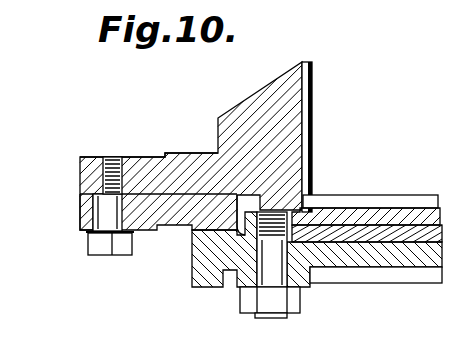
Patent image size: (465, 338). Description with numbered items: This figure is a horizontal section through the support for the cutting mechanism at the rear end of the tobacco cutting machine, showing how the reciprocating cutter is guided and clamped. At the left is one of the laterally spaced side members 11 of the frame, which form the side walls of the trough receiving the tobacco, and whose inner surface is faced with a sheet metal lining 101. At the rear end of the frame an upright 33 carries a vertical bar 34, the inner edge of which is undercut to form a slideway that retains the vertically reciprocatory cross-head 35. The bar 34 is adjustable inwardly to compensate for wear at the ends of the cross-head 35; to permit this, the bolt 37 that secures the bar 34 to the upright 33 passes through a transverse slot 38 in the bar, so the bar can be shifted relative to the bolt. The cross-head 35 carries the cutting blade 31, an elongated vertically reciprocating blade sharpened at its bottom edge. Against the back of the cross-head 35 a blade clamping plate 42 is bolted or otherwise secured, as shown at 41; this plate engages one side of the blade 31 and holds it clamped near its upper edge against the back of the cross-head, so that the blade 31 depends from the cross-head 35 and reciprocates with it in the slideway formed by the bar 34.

The side members 11 is at (265, 130).
The sheet metal lining 101 is at (312, 106).
The uprights 33 is at (178, 160).
The vertical bars 34 is at (80, 212).
The transverse slots 38 is at (98, 218).
The bolts 37 is at (123, 245).
The blade clamping plate 42 is at (363, 210).
The cutting blade 31 is at (403, 228).
The cross-head 35 is at (400, 257).
The bolt securing the clamping plate 41 is at (310, 275).